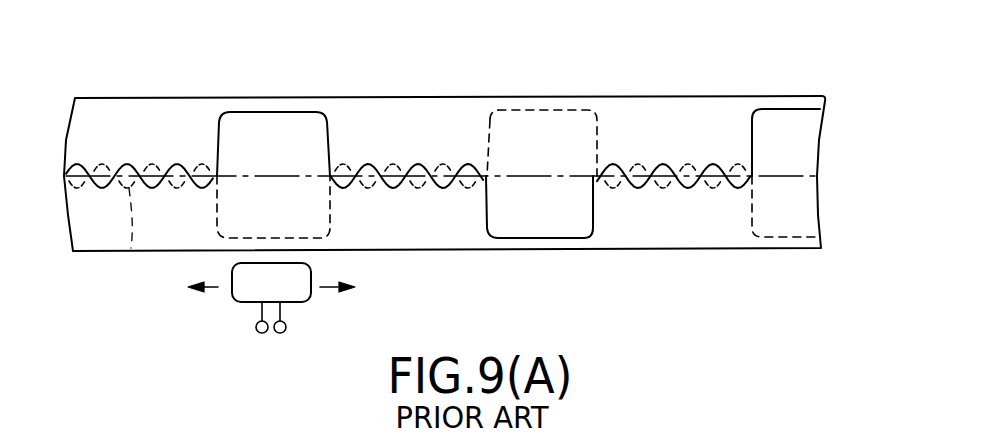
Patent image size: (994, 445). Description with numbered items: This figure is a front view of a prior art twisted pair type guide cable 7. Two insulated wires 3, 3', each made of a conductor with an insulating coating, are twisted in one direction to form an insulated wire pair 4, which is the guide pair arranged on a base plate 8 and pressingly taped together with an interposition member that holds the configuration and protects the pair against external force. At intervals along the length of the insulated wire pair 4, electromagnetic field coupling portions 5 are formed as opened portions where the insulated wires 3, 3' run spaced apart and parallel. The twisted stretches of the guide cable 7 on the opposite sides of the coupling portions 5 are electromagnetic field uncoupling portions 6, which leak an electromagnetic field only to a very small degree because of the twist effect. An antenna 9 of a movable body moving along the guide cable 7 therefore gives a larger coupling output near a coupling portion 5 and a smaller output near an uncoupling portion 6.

The insulated wire 3 is at (139, 122).
The insulated wire 3' is at (144, 247).
The insulated wire pair 4 is at (397, 143).
The electromagnetic field coupling portion 5 is at (261, 112).
The electromagnetic field uncoupling portion 6 is at (412, 187).
The guide cable 7 is at (532, 92).
The base plate 8 is at (458, 118).
The antenna 9 is at (287, 293).